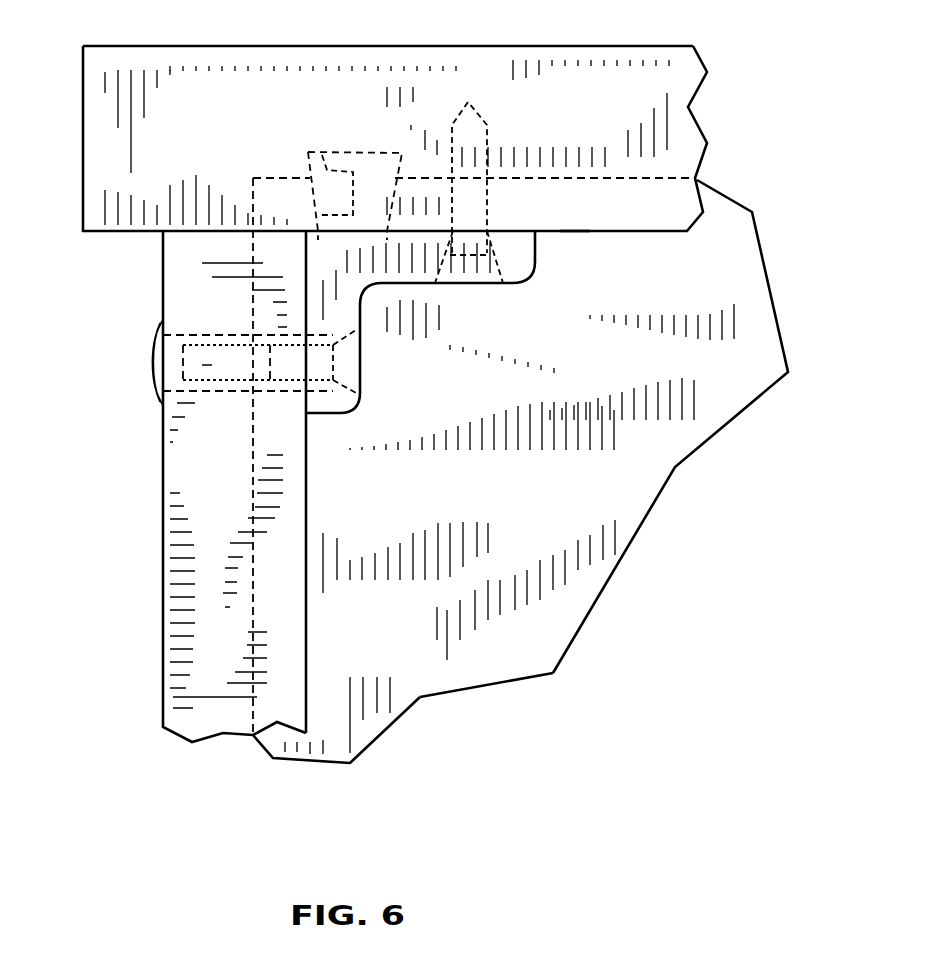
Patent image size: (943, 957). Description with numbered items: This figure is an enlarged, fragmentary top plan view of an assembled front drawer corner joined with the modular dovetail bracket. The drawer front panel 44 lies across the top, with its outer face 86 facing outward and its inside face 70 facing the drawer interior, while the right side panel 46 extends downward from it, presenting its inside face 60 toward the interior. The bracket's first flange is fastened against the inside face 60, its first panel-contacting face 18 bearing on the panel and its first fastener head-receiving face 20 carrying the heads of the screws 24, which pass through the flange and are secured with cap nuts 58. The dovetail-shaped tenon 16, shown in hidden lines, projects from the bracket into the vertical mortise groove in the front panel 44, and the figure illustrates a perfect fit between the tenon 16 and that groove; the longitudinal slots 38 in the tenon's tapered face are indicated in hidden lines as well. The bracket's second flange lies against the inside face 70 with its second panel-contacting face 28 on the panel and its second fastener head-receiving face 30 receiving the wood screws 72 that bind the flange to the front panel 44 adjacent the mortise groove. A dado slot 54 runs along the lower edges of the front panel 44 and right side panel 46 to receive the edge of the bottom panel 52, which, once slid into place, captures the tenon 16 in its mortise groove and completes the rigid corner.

The dovetail-shaped tenon 16 is at (332, 126).
The first panel-contacting face 18 is at (306, 397).
The first fastener head-receiving face 20 is at (360, 363).
The screws 24 is at (233, 340).
The second panel-contacting face 28 is at (505, 231).
The second fastener head-receiving face 30 is at (467, 284).
The longitudinal slots 38 is at (308, 145).
The front panel 44 is at (708, 112).
The right side panel 46 is at (150, 640).
The bottom panel 52 is at (538, 663).
The dado slot 54 is at (658, 225).
The cap nuts 58 is at (152, 360).
The inside face of right side panel 60 is at (306, 517).
The inside face of front panel 70 is at (573, 231).
The wood screws 72 is at (490, 127).
The outer face of front panel 86 is at (396, 46).